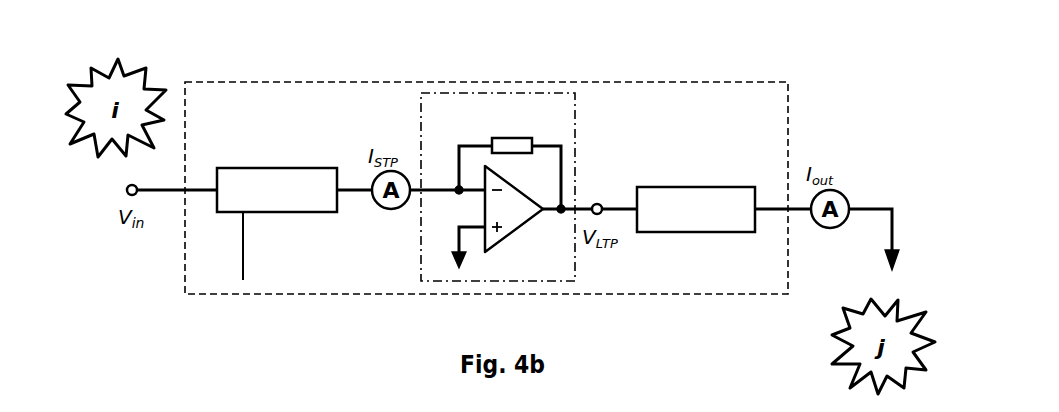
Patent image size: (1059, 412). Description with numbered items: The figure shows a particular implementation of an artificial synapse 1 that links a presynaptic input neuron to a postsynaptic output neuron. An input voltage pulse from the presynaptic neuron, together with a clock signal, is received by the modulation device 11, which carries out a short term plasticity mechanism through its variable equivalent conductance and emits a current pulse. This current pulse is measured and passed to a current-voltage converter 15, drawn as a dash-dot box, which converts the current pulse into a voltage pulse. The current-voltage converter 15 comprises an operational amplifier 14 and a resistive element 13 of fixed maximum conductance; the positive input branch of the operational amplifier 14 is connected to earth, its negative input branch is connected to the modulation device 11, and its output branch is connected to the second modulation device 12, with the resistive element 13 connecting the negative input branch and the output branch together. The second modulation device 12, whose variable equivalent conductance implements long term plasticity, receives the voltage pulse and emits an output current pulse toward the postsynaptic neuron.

The artificial synapse 1 is at (715, 82).
The modulation device 11 is at (317, 213).
The second modulation device 12 is at (682, 185).
The resistive element 13 is at (493, 138).
The operational amplifier 14 is at (500, 244).
The current-voltage converter 15 is at (575, 127).